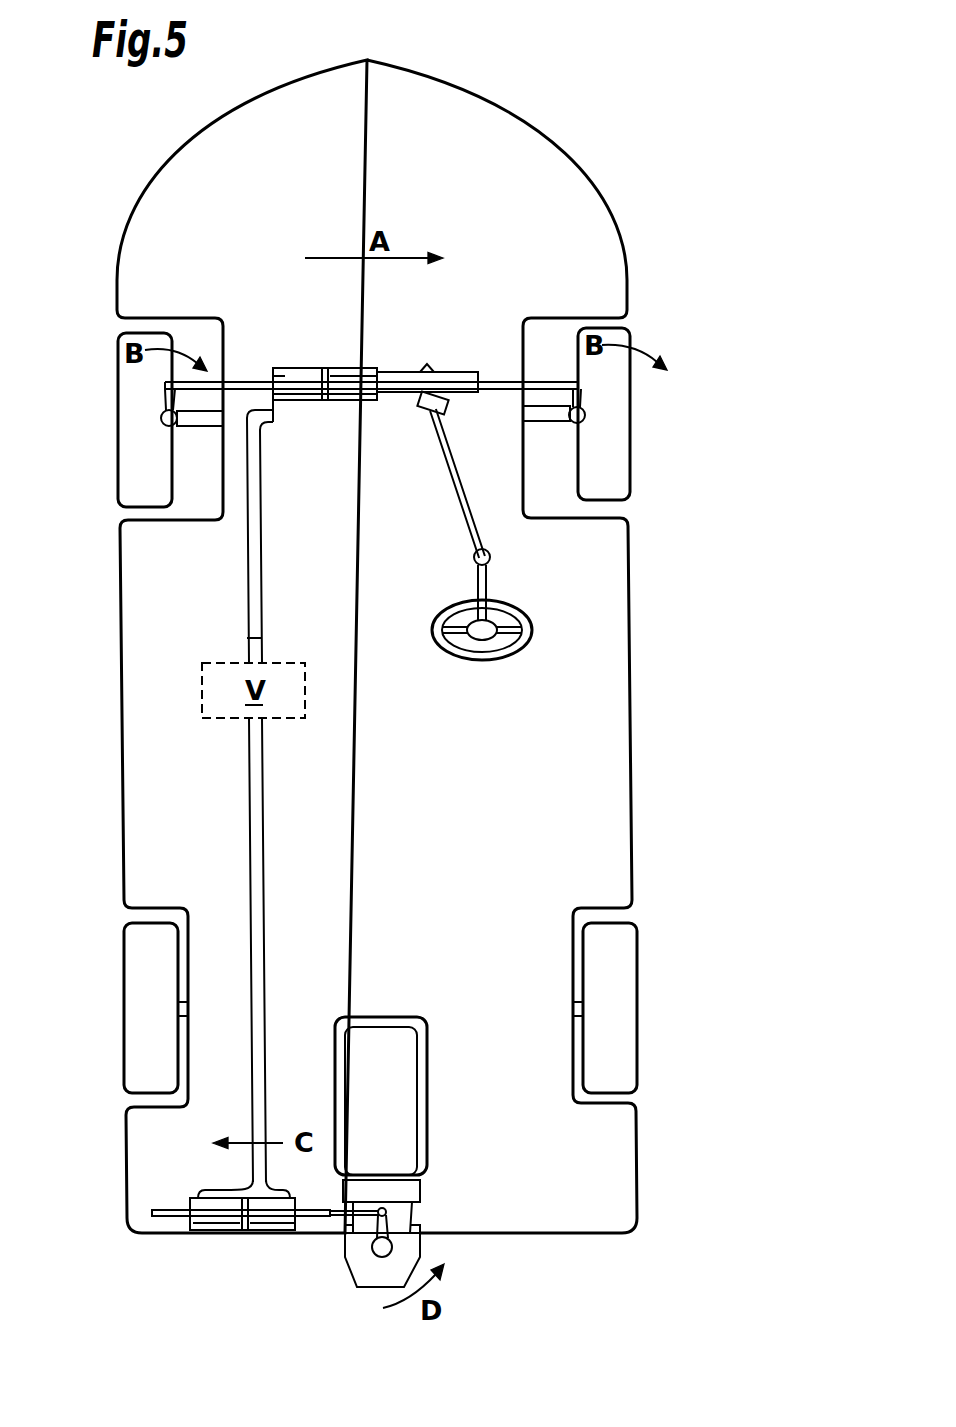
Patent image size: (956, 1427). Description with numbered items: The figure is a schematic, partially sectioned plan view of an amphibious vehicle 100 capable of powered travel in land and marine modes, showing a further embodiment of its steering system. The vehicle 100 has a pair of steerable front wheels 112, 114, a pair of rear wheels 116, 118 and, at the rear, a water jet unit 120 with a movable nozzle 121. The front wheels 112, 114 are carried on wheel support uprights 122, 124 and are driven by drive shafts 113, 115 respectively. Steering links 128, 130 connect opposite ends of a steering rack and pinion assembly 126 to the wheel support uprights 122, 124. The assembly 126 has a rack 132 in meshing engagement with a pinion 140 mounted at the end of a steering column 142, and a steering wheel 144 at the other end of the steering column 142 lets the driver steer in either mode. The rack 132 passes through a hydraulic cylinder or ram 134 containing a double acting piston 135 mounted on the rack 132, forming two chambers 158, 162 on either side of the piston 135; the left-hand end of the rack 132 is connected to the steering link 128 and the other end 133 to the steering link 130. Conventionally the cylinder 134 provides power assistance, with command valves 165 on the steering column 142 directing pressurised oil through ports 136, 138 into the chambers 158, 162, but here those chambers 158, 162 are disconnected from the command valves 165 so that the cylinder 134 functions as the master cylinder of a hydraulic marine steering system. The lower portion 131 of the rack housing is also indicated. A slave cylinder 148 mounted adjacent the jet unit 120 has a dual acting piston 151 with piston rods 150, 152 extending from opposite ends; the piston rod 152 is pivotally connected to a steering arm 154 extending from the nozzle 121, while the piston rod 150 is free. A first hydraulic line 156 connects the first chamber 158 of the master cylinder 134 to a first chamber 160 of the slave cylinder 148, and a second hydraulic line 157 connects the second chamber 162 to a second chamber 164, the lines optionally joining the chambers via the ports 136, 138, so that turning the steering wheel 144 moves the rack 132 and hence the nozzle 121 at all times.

The amphibious vehicle 100 is at (97, 240).
The front wheel 112 is at (130, 470).
The drive shaft 113 is at (203, 427).
The front wheel 114 is at (615, 462).
The drive shaft 115 is at (545, 421).
The rear wheel 116 is at (140, 990).
The rear wheel 118 is at (612, 990).
The water jet unit 120 is at (400, 1123).
The movable nozzle 121 is at (405, 1250).
The wheel support upright 122 is at (160, 417).
The wheel support upright 124 is at (587, 413).
The steering rack and pinion assembly 126 is at (373, 373).
The steering link 128 is at (218, 382).
The steering link 130 is at (546, 380).
The rack housing lower portion 131 is at (404, 393).
The rack 132 is at (395, 372).
The other end of the rack 133 is at (466, 393).
The hydraulic cylinder 134 is at (303, 368).
The double acting piston 135 is at (327, 400).
The port 136 is at (273, 382).
The port 138 is at (338, 376).
The pinion 140 is at (430, 368).
The steering column 142 is at (455, 530).
The steering wheel 144 is at (432, 628).
The slave cylinder 148 is at (215, 1196).
The piston rod 150 is at (162, 1218).
The dual acting piston 151 is at (245, 1231).
The piston rod 152 is at (308, 1218).
The steering arm 154 is at (412, 1225).
The first hydraulic line 156 is at (245, 582).
The second hydraulic line 157 is at (245, 637).
The first chamber 158 is at (296, 394).
The first chamber 160 is at (200, 1226).
The second chamber 162 is at (354, 394).
The second chamber 164 is at (265, 1226).
The command valves 165 is at (428, 412).